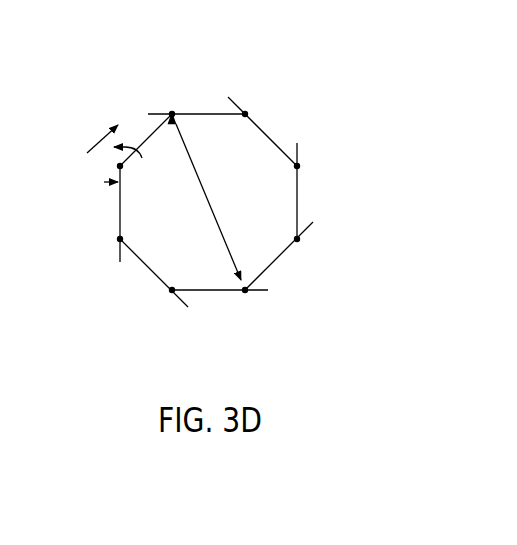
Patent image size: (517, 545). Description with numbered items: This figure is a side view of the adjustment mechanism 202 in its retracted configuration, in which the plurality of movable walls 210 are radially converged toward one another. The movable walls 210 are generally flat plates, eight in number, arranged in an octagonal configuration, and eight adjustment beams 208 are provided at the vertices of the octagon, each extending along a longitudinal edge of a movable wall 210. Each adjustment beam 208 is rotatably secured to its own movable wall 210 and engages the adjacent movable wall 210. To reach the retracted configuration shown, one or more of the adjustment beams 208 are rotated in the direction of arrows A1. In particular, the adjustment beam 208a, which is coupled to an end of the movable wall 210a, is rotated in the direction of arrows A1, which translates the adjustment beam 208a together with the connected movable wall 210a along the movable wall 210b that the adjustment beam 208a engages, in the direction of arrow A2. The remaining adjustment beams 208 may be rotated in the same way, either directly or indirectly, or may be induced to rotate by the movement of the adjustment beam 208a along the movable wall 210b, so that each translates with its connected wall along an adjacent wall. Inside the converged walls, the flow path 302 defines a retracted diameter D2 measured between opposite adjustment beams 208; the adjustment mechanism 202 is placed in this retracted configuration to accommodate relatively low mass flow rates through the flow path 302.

The adjustment mechanism 202 is at (117, 83).
The adjustment beams 208 is at (173, 112).
The adjustment beam 208a is at (125, 168).
The movable walls 210 is at (270, 137).
The movable wall 210a is at (117, 230).
The movable wall 210b is at (143, 137).
The flow path 302 is at (185, 238).
The retracted diameter D2 is at (200, 160).
The direction of rotation arrows A1 is at (103, 177).
The direction of translation arrow A2 is at (92, 148).